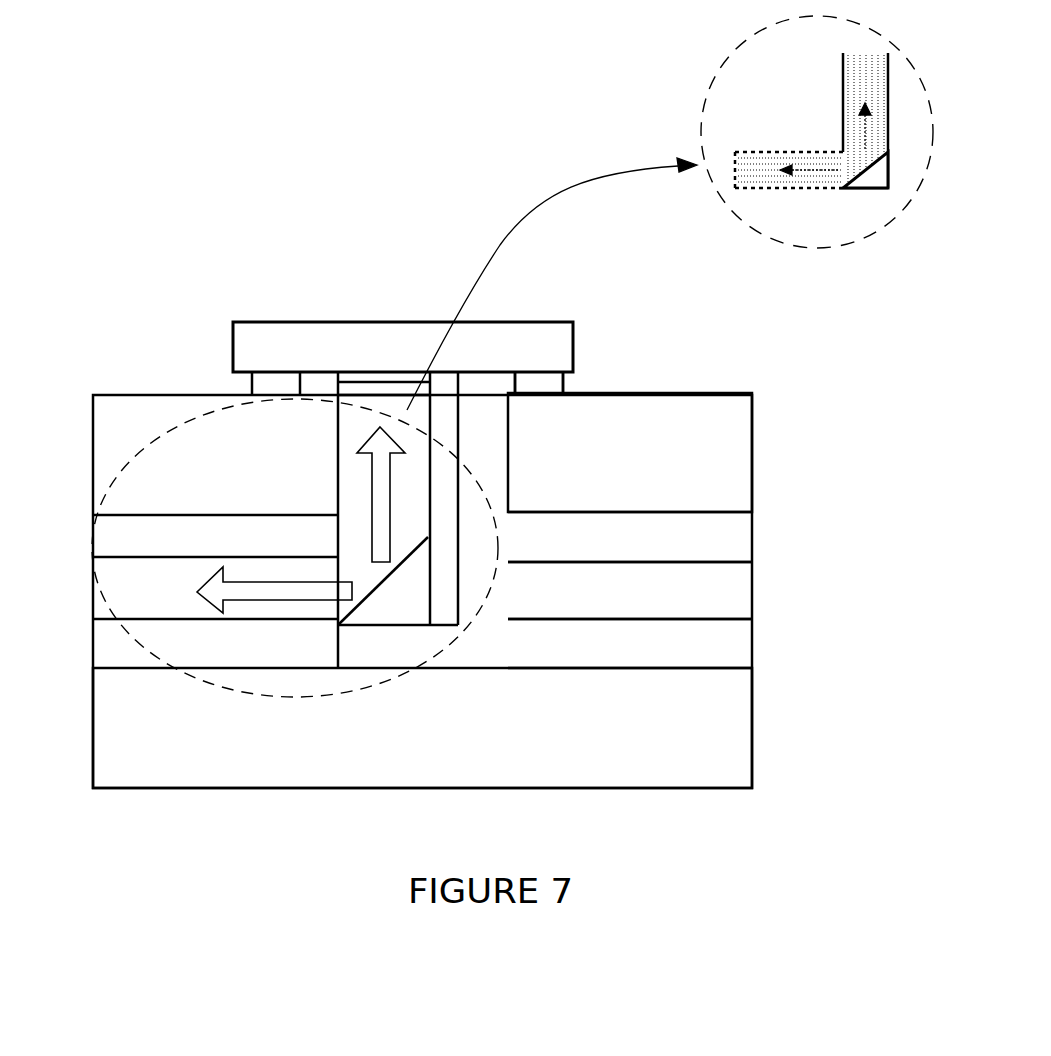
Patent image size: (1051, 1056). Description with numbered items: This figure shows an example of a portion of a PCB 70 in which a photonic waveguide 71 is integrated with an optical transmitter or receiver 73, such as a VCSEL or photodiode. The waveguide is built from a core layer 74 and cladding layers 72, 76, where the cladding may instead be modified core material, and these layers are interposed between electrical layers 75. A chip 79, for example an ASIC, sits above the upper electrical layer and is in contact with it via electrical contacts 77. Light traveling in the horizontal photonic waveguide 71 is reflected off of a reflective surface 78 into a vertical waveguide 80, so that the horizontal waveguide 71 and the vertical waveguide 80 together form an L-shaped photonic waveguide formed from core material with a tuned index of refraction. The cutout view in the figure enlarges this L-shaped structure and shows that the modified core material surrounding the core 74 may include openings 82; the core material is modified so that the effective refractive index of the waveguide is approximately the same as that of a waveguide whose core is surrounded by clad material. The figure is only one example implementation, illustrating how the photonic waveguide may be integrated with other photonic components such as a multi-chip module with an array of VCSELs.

The PCB 70 is at (688, 393).
The photonic waveguide 71 is at (93, 572).
The cladding layer 72 is at (752, 655).
The optical transmitter or receiver 73 is at (368, 383).
The core layer 74 is at (752, 598).
The electrical layers 75 is at (752, 430).
The cladding layer 76 is at (752, 535).
The electrical contacts 77 is at (565, 381).
The reflective surface 78 is at (412, 552).
The chip 79 is at (464, 331).
The vertical waveguide 80 is at (428, 427).
The openings 82 is at (810, 155).